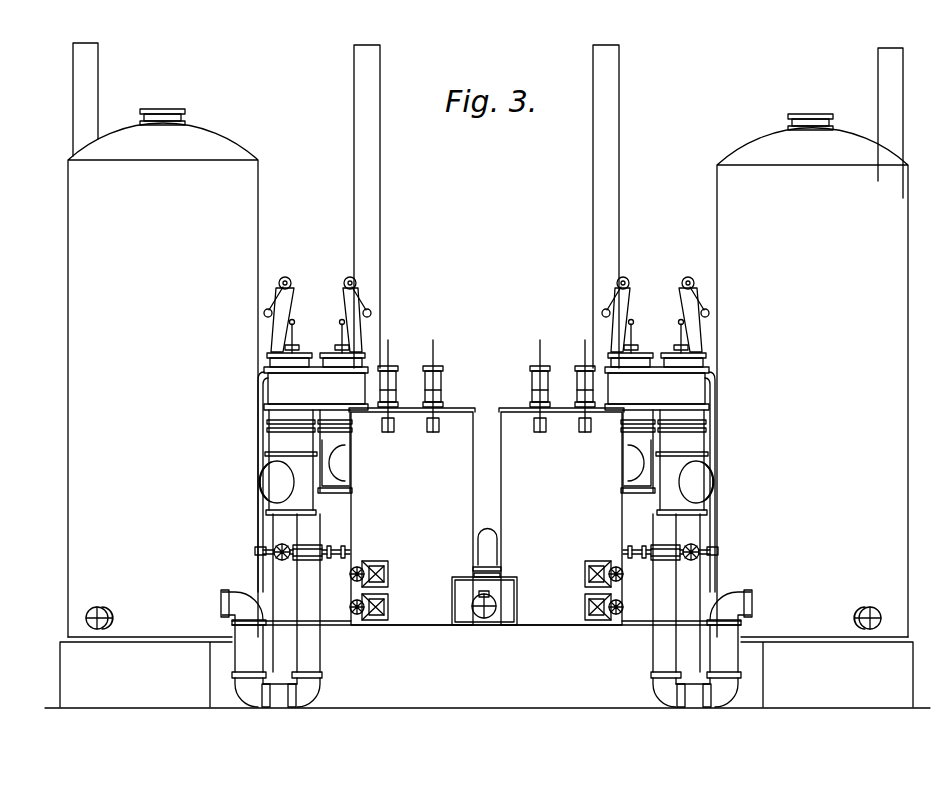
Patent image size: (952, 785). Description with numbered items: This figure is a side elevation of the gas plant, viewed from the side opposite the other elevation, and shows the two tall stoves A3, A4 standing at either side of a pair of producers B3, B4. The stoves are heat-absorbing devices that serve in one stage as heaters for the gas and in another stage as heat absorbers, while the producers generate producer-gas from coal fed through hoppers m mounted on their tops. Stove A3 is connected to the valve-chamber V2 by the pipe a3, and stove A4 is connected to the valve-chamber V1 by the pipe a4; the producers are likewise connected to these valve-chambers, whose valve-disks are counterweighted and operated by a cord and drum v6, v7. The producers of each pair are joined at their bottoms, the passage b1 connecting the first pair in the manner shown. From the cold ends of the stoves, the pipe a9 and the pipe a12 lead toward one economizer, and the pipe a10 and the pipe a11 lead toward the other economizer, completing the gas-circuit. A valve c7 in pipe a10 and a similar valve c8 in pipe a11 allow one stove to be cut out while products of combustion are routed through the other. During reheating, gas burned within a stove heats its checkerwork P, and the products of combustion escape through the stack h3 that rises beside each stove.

The stove A3 is at (159, 408).
The stove A4 is at (815, 410).
The stack h3 is at (73, 86).
The cord and drum v6 is at (646, 305).
The cord and drum v7 is at (268, 308).
The valve-chamber V2 is at (316, 388).
The valve-chamber V1 is at (657, 388).
The pipe a3 is at (288, 462).
The pipe a4 is at (685, 462).
The pipe a10 is at (258, 433).
The pipe a9 is at (717, 428).
The producer B3 is at (412, 516).
The producer B4 is at (561, 516).
The hopper m is at (424, 383).
The checkerwork P is at (486, 590).
The passage b1 is at (484, 577).
The pipe a11 is at (312, 610).
The pipe a12 is at (660, 610).
The valve c7 is at (277, 563).
The valve c8 is at (335, 564).